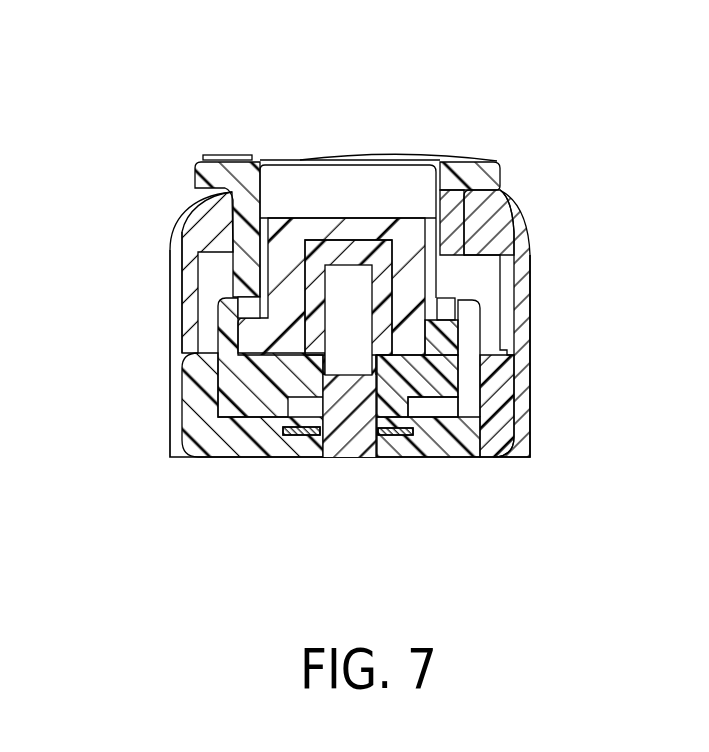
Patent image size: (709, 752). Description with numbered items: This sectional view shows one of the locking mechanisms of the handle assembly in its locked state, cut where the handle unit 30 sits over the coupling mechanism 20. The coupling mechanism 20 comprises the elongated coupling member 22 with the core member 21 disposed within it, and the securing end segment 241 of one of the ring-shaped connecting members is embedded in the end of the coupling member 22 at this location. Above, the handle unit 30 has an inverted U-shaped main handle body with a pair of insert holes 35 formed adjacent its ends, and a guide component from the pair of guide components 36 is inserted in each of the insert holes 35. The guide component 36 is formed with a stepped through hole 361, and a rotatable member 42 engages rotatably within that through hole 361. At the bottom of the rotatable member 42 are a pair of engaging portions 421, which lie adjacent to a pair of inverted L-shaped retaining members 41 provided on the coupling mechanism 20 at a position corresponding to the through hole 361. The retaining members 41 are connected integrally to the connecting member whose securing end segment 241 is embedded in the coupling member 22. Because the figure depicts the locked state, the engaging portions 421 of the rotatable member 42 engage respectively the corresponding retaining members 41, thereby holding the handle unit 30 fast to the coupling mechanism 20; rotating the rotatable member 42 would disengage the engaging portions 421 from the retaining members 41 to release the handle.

The coupling mechanism 20 is at (188, 444).
The core member 21 is at (293, 426).
The coupling member 22 is at (193, 400).
The handle unit 30 is at (183, 210).
The insert holes 35 is at (233, 200).
The guide components 36 is at (475, 173).
The through hole 361 is at (440, 228).
The retaining members 41 is at (484, 304).
The rotatable member 42 is at (340, 200).
The engaging portions 421 is at (437, 330).
The securing end segment 241 is at (412, 400).